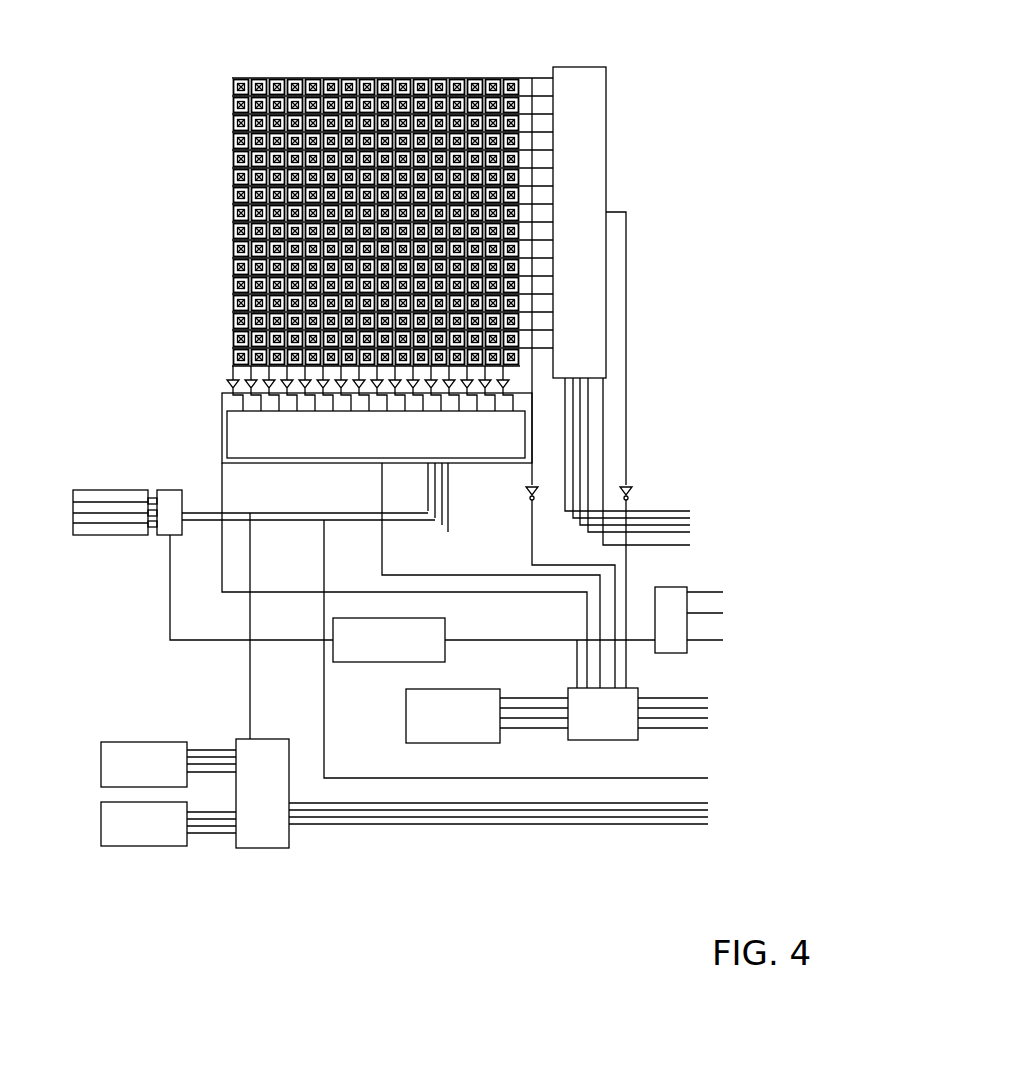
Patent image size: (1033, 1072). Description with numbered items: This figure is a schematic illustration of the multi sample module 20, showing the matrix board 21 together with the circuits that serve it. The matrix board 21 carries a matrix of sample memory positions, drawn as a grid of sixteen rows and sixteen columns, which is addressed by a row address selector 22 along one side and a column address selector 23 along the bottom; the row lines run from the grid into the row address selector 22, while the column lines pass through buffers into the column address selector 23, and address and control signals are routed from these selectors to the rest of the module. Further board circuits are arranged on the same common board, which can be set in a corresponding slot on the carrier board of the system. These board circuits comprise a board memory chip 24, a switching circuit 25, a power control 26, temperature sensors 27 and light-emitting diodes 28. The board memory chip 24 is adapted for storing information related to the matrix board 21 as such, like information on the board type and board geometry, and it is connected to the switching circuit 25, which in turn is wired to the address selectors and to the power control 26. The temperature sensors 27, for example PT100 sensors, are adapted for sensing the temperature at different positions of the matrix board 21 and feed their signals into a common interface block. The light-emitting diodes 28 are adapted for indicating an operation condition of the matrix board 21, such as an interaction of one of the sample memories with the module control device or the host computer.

The multi sample module 20 is at (155, 74).
The matrix board 21 is at (213, 78).
The row address selector 22 is at (579, 222).
The column address selector 23 is at (377, 428).
The board memory chip 24 is at (487, 716).
The switching circuit 25 is at (638, 714).
The power control 26 is at (389, 640).
The temperature sensors 27 is at (404, 793).
The light-emitting diodes 28 is at (254, 502).